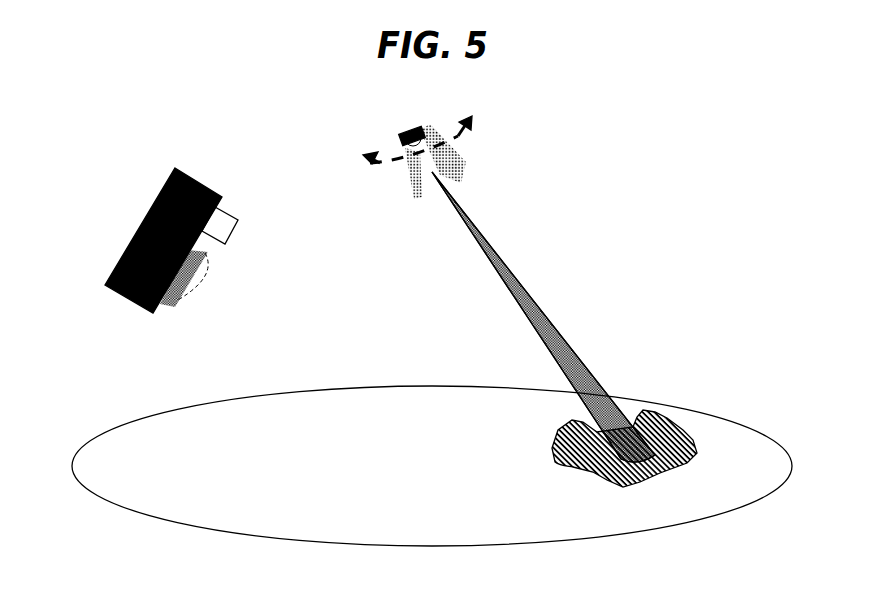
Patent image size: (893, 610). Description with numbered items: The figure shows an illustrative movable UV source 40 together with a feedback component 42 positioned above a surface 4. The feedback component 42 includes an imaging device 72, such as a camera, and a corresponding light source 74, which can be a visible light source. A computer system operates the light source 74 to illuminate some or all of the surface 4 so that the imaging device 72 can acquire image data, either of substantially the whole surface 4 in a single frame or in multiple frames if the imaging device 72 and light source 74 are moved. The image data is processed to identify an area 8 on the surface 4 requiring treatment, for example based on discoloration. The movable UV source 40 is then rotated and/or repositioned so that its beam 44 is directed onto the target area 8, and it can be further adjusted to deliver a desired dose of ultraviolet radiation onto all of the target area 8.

The surface 4 is at (310, 410).
The target area 8 is at (657, 417).
The movable UV source 40 is at (412, 125).
The feedback component 42 is at (176, 252).
The beam 44 is at (522, 302).
The imaging device 72 is at (140, 307).
The light source 74 is at (225, 225).